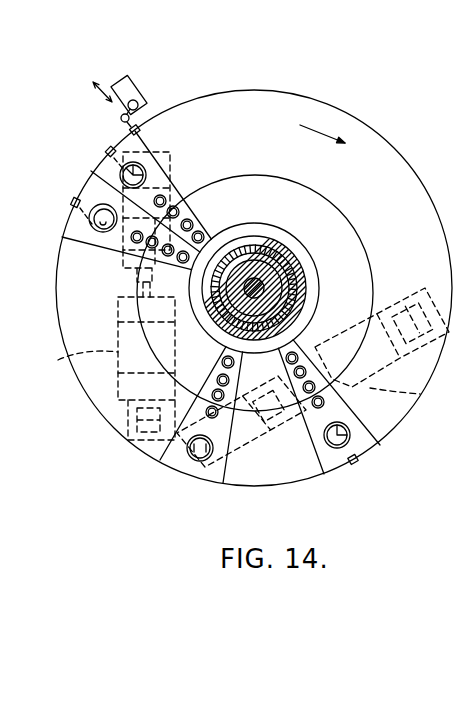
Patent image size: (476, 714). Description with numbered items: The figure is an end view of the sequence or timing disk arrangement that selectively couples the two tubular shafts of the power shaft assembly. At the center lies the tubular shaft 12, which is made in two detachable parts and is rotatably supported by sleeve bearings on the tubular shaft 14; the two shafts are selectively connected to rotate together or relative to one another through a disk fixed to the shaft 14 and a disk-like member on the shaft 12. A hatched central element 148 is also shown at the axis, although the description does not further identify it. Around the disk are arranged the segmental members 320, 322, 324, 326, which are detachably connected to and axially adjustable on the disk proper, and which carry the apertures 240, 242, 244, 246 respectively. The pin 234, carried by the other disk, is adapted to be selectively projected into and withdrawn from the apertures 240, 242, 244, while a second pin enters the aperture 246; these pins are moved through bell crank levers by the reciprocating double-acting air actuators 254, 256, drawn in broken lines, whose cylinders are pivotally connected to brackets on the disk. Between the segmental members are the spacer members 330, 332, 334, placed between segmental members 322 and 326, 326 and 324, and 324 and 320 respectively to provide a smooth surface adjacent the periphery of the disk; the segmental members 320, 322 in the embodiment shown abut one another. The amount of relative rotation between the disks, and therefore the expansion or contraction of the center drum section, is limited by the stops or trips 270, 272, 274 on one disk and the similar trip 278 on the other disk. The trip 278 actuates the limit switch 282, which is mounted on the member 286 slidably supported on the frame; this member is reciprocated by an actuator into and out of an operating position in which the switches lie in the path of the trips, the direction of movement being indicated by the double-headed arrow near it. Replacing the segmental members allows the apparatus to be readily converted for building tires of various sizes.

The tubular shaft 12 is at (283, 240).
The tubular shaft 14 is at (284, 271).
The shaft 148 is at (264, 289).
The pin 234 is at (160, 150).
The aperture 240 is at (121, 173).
The aperture 242 is at (90, 222).
The aperture 244 is at (350, 440).
The aperture 246 is at (158, 461).
The air actuator 254 is at (58, 358).
The air actuator 256 is at (418, 396).
The trip 270 is at (105, 151).
The trip 272 is at (71, 203).
The trip 274 is at (360, 459).
The trip 278 is at (128, 130).
The limit switch 282 is at (139, 91).
The member 286 is at (128, 74).
The segmental member 320 is at (188, 201).
The segmental member 322 is at (113, 250).
The segmental member 324 is at (326, 470).
The segmental member 326 is at (213, 474).
The spacer member 330 is at (92, 395).
The spacer member 332 is at (262, 480).
The spacer member 334 is at (357, 124).